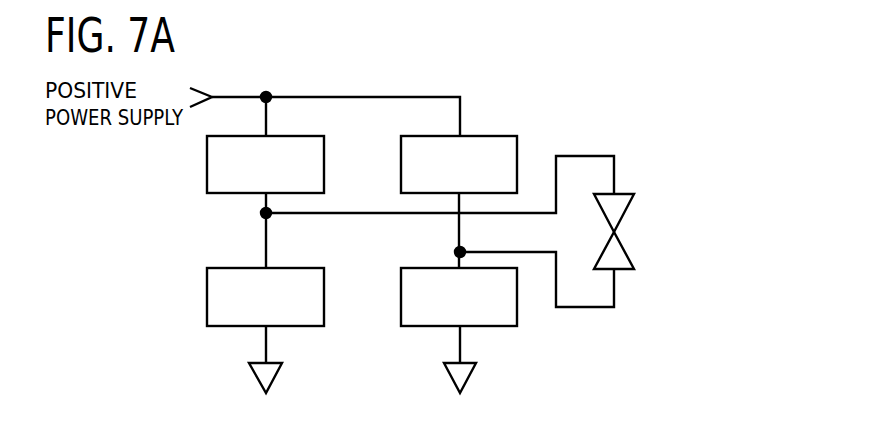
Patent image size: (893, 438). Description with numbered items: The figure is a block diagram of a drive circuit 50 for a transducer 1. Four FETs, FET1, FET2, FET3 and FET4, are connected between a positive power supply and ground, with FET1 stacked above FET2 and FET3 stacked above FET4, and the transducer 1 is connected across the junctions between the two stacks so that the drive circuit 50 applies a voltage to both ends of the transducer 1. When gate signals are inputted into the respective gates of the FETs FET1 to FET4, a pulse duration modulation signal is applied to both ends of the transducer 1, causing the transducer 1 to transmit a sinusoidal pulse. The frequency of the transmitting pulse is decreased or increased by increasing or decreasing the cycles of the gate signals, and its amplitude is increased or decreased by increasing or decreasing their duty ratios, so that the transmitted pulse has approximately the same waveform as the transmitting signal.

The drive circuit 50 is at (469, 231).
The transducer 1 is at (625, 215).
The FET FET1 is at (265, 164).
The FET FET2 is at (265, 297).
The FET FET3 is at (459, 164).
The FET FET4 is at (459, 297).